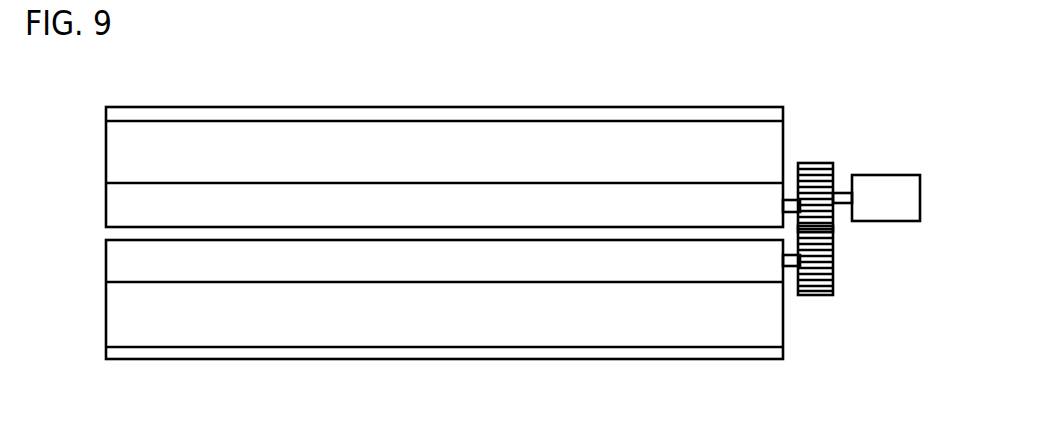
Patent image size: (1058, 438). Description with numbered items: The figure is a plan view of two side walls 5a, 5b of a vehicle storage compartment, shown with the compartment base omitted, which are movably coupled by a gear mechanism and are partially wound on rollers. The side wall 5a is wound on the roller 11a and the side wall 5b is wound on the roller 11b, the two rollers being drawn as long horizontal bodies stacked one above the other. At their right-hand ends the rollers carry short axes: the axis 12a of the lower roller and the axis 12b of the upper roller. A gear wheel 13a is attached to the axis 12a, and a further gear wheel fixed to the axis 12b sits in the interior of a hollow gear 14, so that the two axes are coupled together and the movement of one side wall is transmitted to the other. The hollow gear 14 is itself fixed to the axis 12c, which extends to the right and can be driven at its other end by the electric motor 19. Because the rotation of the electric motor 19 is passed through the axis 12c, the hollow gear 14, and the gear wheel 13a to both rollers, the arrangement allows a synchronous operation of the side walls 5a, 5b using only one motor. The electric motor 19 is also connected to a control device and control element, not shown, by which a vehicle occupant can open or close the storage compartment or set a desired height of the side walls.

The side wall 5a is at (350, 335).
The side wall 5b is at (413, 132).
The roller 11a is at (105, 251).
The roller 11b is at (106, 202).
The axis 12a is at (790, 266).
The axis 12b is at (791, 199).
The axis 12c is at (844, 193).
The gear wheel 13a is at (822, 281).
The hollow gear 14 is at (820, 164).
The electric motor 19 is at (882, 175).